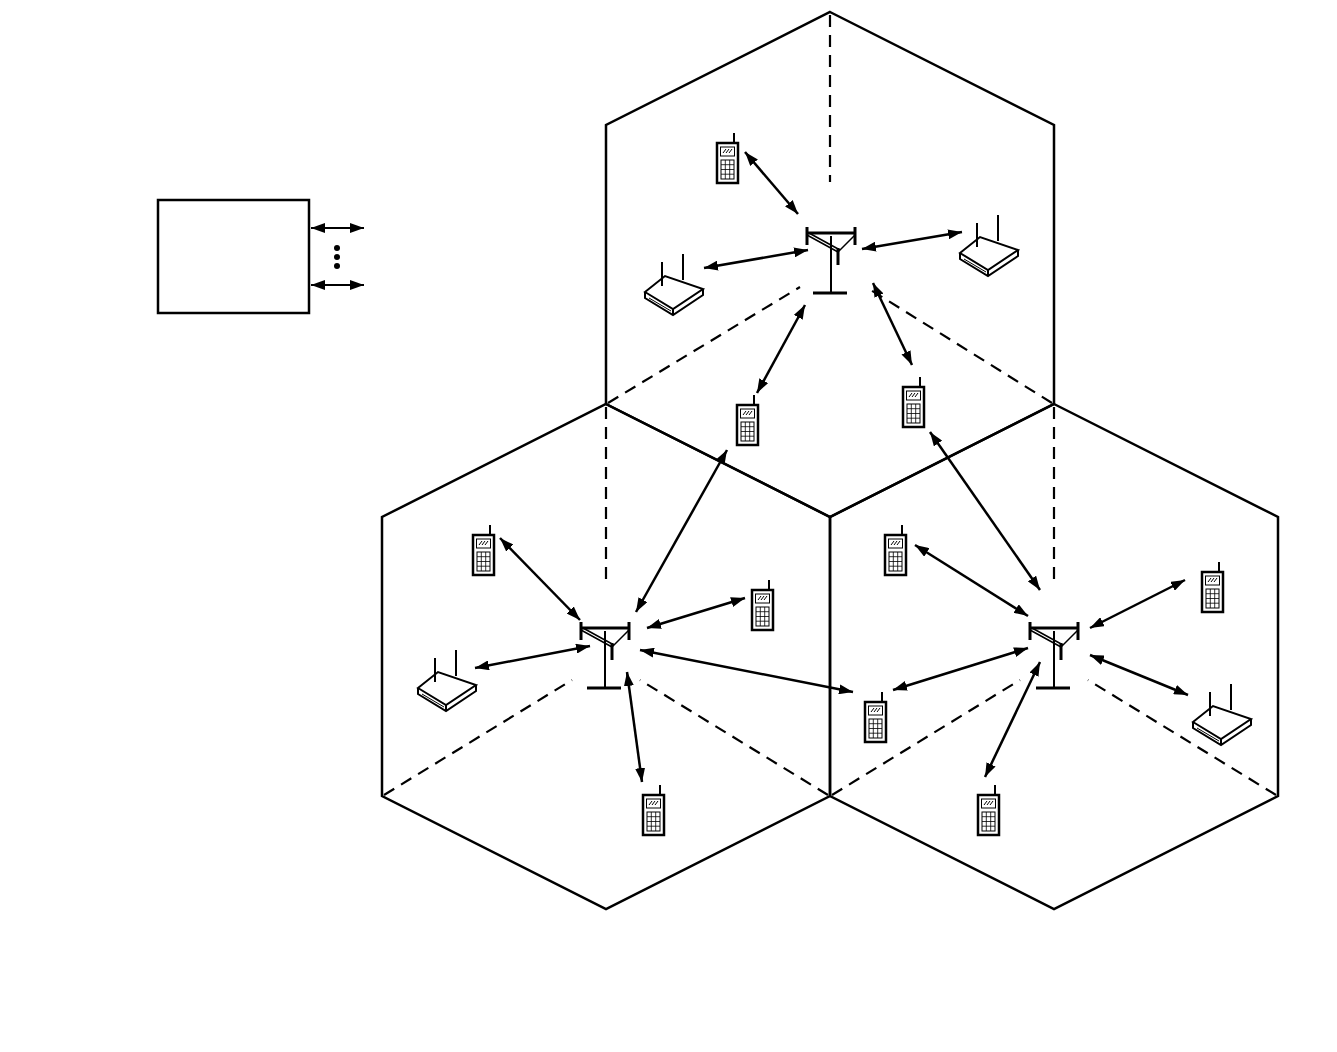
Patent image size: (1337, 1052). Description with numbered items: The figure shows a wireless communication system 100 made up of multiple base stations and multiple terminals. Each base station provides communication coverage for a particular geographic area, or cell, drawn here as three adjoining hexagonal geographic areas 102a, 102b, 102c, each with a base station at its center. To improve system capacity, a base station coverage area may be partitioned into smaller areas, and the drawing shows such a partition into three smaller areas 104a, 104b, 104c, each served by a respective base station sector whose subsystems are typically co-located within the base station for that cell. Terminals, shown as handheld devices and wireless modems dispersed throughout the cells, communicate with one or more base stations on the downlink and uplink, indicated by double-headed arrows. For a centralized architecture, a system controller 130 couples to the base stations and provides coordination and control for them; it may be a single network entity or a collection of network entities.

The wireless communication system 100 is at (1206, 87).
The geographic area 102a is at (957, 53).
The geographic area 102b is at (493, 460).
The geographic area 102c is at (1163, 462).
The smaller area 104a is at (808, 86).
The smaller area 104b is at (901, 86).
The smaller area 104c is at (855, 495).
The system controller 130 is at (230, 199).